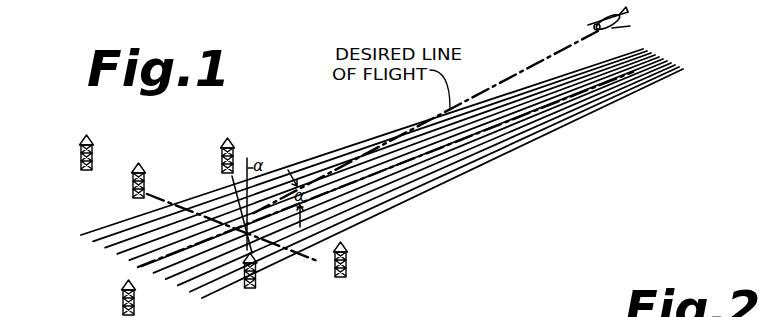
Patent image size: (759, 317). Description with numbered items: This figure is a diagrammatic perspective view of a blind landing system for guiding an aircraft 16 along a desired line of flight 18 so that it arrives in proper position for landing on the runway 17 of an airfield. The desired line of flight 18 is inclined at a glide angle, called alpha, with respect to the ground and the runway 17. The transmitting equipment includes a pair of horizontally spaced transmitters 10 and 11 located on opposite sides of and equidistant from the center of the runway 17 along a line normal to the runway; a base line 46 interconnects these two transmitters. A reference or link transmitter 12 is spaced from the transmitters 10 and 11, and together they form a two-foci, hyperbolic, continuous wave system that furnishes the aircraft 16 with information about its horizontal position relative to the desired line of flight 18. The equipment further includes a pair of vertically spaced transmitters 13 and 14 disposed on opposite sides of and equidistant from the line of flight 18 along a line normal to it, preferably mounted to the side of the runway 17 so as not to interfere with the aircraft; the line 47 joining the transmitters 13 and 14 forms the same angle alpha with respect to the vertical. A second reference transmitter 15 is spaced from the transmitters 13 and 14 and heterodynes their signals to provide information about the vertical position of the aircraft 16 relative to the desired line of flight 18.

The horizontally spaced transmitter 10 is at (146, 150).
The horizontally spaced transmitter 11 is at (348, 245).
The reference or link transmitter 12 is at (81, 143).
The vertically spaced transmitter 13 is at (243, 257).
The vertically spaced transmitter 14 is at (221, 152).
The reference transmitter 15 is at (122, 285).
The aircraft 16 is at (629, 33).
The runway 17 is at (497, 148).
The desired line of flight 18 is at (533, 62).
The base line 46 is at (318, 262).
The line joining the transmitters 13 and 14 47 is at (226, 181).